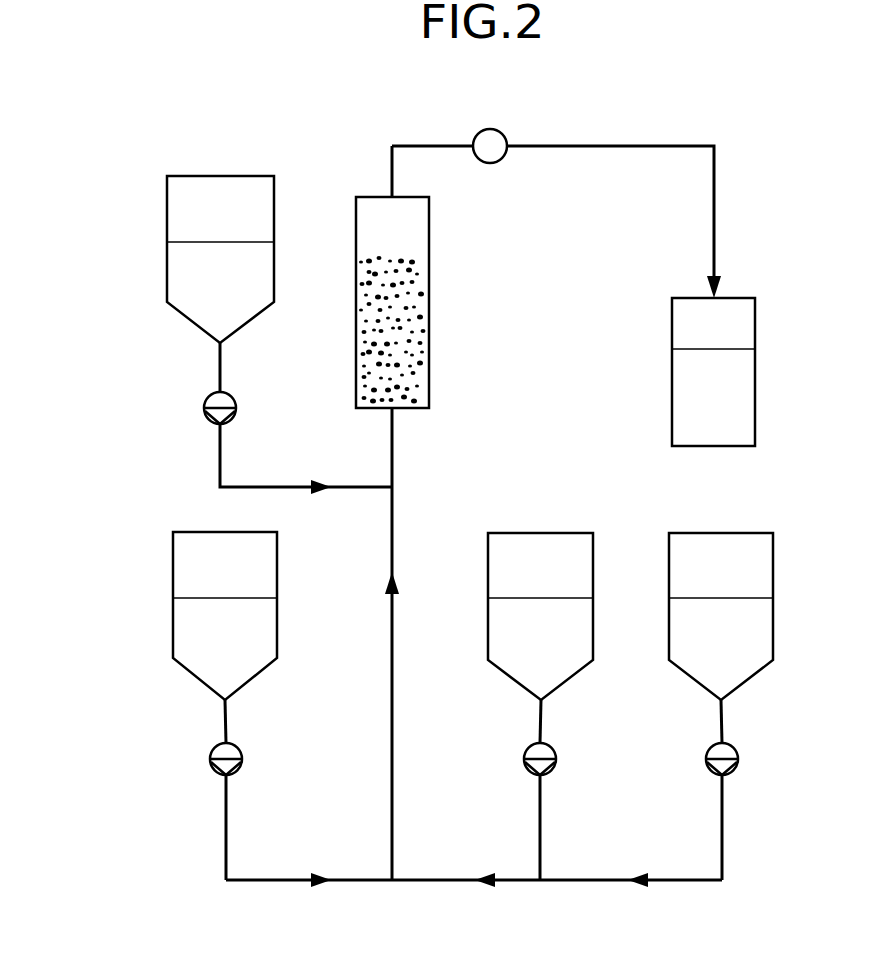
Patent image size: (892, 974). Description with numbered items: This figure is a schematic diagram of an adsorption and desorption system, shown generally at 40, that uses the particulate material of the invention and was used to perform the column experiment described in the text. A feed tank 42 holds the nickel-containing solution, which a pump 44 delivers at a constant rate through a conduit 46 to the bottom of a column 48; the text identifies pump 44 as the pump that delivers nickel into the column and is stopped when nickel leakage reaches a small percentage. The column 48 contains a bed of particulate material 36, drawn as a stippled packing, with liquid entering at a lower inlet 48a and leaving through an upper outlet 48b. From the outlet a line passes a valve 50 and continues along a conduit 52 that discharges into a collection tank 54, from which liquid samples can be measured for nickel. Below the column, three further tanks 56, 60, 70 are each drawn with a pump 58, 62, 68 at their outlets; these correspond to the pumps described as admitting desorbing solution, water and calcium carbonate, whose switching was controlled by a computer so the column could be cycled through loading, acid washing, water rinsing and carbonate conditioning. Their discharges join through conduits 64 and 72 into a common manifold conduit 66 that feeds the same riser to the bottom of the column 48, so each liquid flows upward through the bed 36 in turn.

The adsorption and desorption system 40 is at (125, 86).
The solvent tank 42 is at (218, 175).
The pump 44 is at (206, 397).
The conduit 46 is at (219, 462).
The column 48 is at (430, 268).
The column inlet 48a is at (396, 410).
The column outlet 48b is at (390, 195).
The particle bed 36 is at (404, 330).
The valve 50 is at (484, 129).
The conduit 52 is at (678, 143).
The collection tank 54 is at (748, 296).
The tank 56 is at (190, 531).
The pump 58 is at (213, 748).
The tank 60 is at (555, 532).
The pump 62 is at (553, 745).
The conduit 64 is at (225, 818).
The manifold conduit 66 is at (446, 885).
The pump 68 is at (736, 748).
The tank 70 is at (760, 532).
The conduit 72 is at (594, 883).